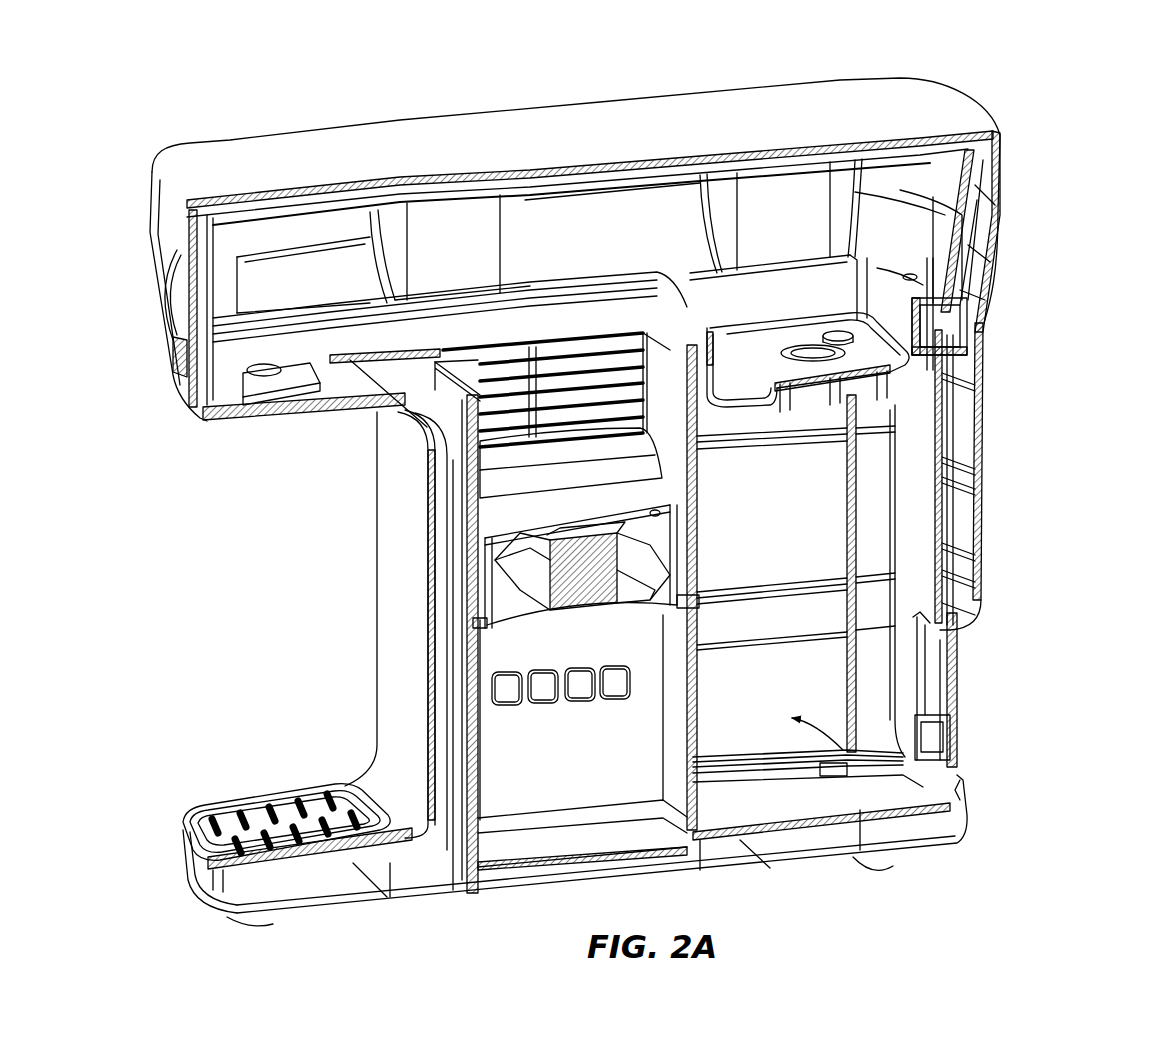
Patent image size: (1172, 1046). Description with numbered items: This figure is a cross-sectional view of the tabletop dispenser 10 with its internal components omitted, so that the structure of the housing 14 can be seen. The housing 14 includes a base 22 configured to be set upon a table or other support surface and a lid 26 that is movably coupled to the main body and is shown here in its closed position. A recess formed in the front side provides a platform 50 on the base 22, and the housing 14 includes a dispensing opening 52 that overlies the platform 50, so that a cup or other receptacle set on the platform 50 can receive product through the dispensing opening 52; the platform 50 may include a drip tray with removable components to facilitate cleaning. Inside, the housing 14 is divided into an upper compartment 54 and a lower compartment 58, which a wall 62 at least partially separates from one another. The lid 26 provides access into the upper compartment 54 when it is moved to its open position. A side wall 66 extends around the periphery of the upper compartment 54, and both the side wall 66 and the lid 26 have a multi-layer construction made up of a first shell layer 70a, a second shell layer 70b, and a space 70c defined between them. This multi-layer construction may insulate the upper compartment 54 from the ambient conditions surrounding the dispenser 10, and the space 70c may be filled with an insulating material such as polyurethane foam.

The dispenser 10 is at (1034, 90).
The housing 14 is at (1003, 492).
The base 22 is at (915, 843).
The lid 26 is at (445, 143).
The platform 50 is at (262, 815).
The dispensing opening 52 is at (255, 397).
The upper compartment 54 is at (308, 266).
The lower compartment 58 is at (957, 775).
The wall 62 is at (738, 410).
The side wall 66 is at (632, 260).
The first shell layer 70a is at (1003, 211).
The second shell layer 70b is at (990, 268).
The space 70c is at (987, 293).